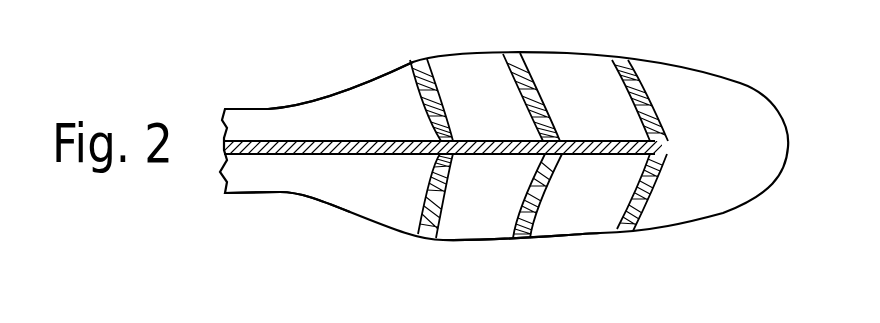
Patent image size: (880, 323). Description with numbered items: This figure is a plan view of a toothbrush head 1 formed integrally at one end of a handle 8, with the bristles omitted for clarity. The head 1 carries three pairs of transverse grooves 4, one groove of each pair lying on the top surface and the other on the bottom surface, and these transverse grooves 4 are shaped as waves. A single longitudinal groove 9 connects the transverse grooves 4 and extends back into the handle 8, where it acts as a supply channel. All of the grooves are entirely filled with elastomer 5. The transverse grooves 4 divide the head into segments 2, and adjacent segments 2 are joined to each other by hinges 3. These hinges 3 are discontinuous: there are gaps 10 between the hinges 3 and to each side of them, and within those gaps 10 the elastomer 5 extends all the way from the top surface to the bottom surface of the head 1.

The toothbrush head 1 is at (700, 220).
The segments of the head 2 is at (583, 95).
The hinges 3 is at (532, 100).
The transverse grooves 4 is at (520, 240).
The elastomer 5 is at (415, 80).
The handle 8 is at (250, 193).
The longitudinal groove 9 is at (358, 153).
The gaps 10 is at (665, 122).